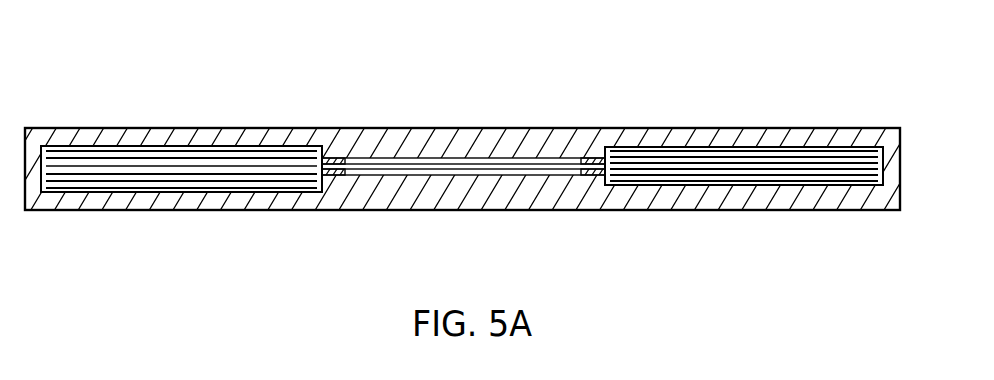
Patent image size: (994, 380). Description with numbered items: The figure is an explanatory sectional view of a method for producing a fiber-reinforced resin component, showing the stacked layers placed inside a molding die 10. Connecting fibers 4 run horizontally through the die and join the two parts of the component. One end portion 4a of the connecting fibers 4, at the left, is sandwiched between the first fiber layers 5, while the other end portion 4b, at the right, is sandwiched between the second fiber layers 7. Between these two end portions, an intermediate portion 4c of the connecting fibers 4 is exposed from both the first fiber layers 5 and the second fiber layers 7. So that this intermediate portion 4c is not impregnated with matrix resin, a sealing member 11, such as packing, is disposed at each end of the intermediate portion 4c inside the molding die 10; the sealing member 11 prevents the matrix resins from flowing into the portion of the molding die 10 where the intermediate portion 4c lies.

The connecting fibers 4 is at (462, 133).
The one end portion 4a is at (226, 160).
The other end portion 4b is at (715, 162).
The intermediate portion 4c is at (499, 159).
The first fiber layers 5 is at (86, 148).
The second fiber layers 7 is at (836, 148).
The molding die 10 is at (466, 212).
The sealing member 11 is at (333, 157).